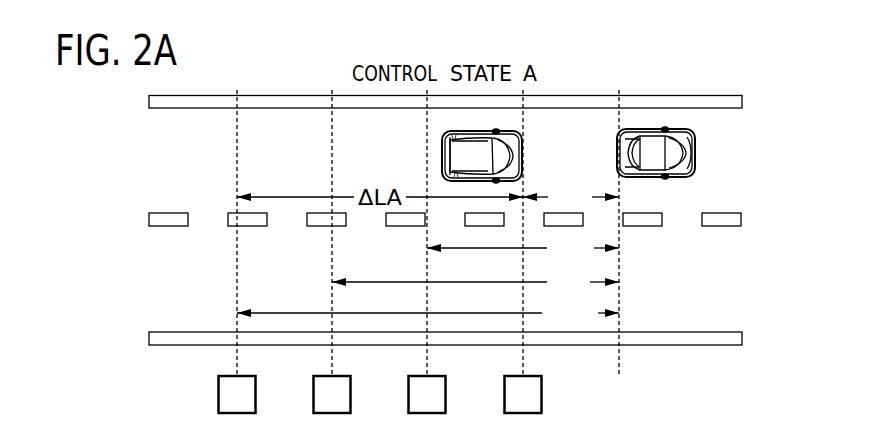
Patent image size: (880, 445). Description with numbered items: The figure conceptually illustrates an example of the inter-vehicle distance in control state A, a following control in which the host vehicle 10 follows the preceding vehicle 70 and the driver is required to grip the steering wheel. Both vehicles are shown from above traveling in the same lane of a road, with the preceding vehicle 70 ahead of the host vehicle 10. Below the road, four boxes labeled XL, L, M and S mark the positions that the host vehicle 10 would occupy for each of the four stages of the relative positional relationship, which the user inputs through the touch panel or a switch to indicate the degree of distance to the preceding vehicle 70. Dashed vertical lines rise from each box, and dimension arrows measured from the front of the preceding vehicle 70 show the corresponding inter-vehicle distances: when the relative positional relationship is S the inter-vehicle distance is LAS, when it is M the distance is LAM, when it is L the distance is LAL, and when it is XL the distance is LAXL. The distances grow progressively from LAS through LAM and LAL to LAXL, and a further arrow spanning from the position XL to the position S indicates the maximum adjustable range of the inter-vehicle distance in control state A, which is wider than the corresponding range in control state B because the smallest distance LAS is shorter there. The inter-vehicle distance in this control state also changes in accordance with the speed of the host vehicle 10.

The host vehicle 10 is at (515, 154).
The preceding vehicle 70 is at (687, 137).
The relative positional relationship XL (extra-large) XL is at (237, 251).
The relative positional relationship L (large) L is at (332, 251).
The relative positional relationship M (medium) M is at (427, 251).
The relative positional relationship S (small) S is at (523, 251).
The inter-vehicle distance LAS is at (571, 197).
The inter-vehicle distance LAM is at (523, 248).
The inter-vehicle distance LAL is at (475, 282).
The inter-vehicle distance LAXL is at (428, 313).